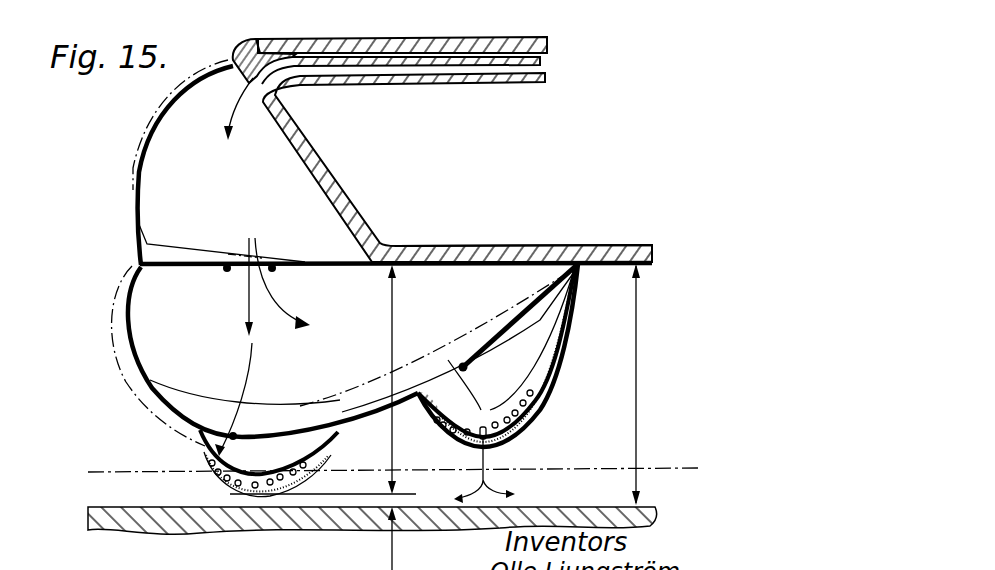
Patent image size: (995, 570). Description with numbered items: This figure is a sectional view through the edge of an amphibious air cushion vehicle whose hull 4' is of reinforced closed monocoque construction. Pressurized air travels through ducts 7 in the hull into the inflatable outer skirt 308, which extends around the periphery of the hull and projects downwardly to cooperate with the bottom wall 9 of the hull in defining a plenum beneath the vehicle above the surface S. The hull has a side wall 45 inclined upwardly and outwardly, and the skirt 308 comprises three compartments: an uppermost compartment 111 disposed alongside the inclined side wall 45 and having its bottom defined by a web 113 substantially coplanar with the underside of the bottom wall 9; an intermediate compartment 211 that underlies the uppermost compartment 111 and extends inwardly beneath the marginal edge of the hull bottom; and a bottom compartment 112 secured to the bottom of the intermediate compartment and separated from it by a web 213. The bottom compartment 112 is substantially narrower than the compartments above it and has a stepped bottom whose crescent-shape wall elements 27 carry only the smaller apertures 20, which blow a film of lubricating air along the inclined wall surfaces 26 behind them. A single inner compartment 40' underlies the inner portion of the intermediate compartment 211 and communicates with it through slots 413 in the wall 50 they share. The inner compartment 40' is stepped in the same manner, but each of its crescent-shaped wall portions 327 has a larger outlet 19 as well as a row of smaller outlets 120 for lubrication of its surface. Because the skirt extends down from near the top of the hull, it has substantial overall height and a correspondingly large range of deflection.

The hull 4' is at (370, 47).
The ducts 7 is at (406, 70).
The bottom wall of the hull 9 is at (462, 262).
The side wall 45 is at (306, 168).
The inflatable outer skirt 308 is at (137, 186).
The uppermost compartment 111 is at (214, 197).
The web 113 is at (290, 262).
The intermediate compartment 211 is at (310, 364).
The web 213 is at (291, 430).
The bottom compartment 112 is at (268, 457).
The smaller apertures 20 is at (209, 463).
The inclined wall surfaces 26 is at (214, 478).
The crescent-shape wall elements 27 is at (226, 488).
The smaller outlets 120 is at (445, 435).
The larger outlet 19 is at (489, 440).
The crescent-shaped wall portions 327 is at (553, 391).
The wall 50 is at (507, 329).
The inner compartment 40' is at (439, 351).
The slots 413 is at (438, 390).
The surface S is at (586, 506).